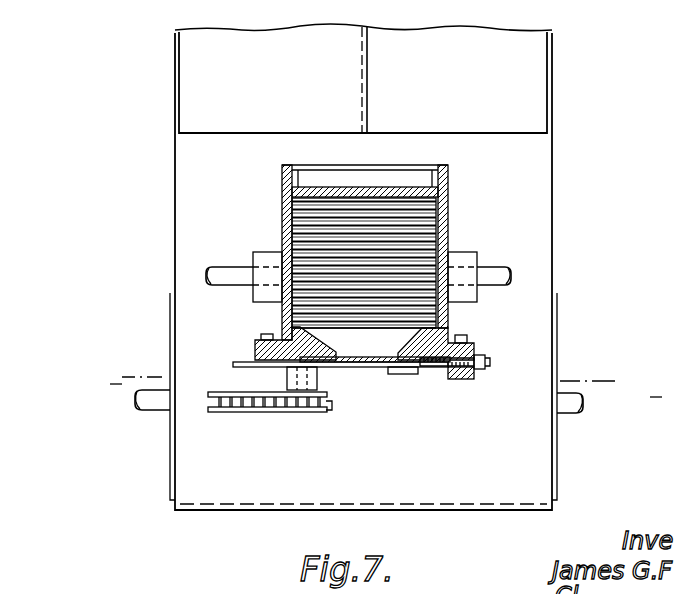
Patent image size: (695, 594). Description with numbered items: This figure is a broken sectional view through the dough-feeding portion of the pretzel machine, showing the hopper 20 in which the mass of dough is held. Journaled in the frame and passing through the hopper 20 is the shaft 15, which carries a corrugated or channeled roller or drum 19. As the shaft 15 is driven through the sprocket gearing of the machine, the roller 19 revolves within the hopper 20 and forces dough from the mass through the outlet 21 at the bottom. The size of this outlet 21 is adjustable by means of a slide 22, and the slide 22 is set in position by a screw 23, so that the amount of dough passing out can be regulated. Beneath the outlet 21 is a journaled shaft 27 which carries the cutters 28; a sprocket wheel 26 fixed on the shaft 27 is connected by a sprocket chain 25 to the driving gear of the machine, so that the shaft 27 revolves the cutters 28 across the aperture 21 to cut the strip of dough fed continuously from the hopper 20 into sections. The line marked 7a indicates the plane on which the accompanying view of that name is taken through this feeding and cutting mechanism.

The shaft 15 is at (493, 280).
The corrugated or channeled roller or drum 19 is at (410, 256).
The hopper 20 is at (282, 217).
The outlet 21 is at (344, 361).
The slide 22 is at (382, 368).
The screw 23 is at (434, 372).
The sprocket chain 25 is at (231, 413).
The sprocket wheel 26 is at (330, 406).
The shaft 27 is at (288, 382).
The cutters 28 is at (237, 364).
The section line 7a- 7a is at (373, 382).